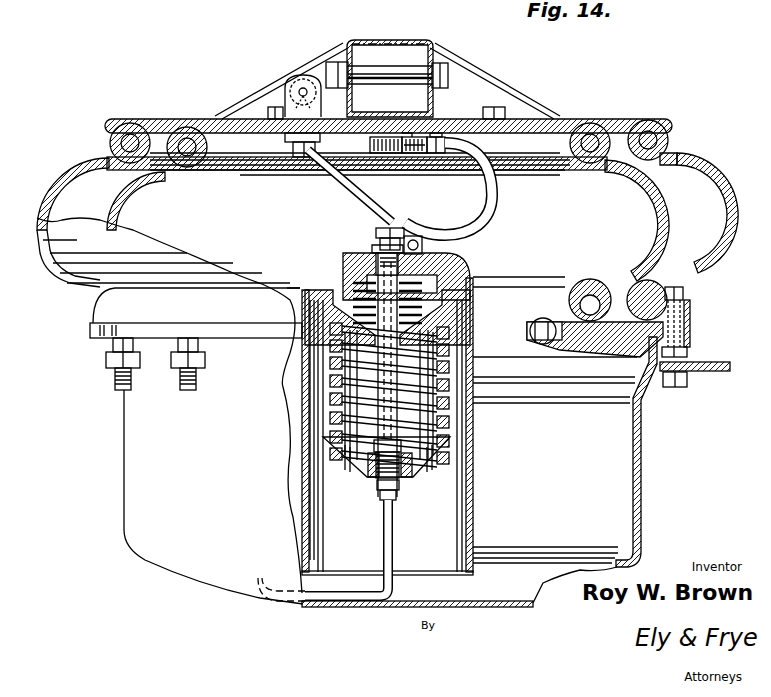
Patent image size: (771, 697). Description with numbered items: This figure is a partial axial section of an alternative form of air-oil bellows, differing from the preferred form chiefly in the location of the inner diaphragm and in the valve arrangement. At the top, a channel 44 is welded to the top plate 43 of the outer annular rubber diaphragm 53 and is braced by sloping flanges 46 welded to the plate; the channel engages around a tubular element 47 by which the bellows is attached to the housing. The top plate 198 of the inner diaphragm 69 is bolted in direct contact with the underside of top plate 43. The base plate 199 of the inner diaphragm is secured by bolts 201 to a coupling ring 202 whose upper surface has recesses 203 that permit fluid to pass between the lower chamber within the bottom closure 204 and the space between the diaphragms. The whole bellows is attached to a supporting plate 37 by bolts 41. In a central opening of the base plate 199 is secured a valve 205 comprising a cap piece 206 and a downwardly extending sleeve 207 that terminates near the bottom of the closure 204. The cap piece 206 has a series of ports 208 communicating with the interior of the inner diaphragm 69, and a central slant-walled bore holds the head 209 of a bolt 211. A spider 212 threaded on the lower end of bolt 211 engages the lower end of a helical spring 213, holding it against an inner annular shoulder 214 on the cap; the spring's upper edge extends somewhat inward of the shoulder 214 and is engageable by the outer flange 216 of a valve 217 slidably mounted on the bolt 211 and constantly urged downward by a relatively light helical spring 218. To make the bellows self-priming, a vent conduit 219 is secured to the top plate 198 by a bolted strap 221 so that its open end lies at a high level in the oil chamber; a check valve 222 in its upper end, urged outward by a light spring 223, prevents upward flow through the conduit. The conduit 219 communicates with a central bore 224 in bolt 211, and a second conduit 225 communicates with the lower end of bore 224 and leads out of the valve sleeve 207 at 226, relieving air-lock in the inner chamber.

The plate 37 is at (715, 362).
The bolts 41 is at (688, 309).
The top plate 43 is at (604, 119).
The channel 44 is at (433, 92).
The sloping flanges 46 is at (541, 103).
The tubular element 47 is at (412, 40).
The outer annular rubber diaphragm 53 is at (732, 195).
The inner diaphragm 69 is at (669, 216).
The top plate of inner diaphragm 198 is at (360, 153).
The base plate of inner diaphragm 199 is at (568, 283).
The bolts 201 is at (545, 318).
The coupling ring 202 is at (691, 329).
The recesses 203 is at (604, 322).
The bottom closure 204 is at (636, 487).
The valve 205 is at (479, 261).
The cap piece 206 is at (458, 260).
The sleeve 207 is at (474, 436).
The ports 208 is at (342, 268).
The head 209 is at (373, 247).
The bolt 211 is at (412, 300).
The spider 212 is at (415, 465).
The helical spring 213 is at (445, 367).
The inner annular shoulder 214 is at (334, 318).
The outer flange 216 is at (462, 294).
The valve 217 is at (327, 348).
The light helical spring 218 is at (412, 285).
The conduit 219 is at (493, 194).
The bolted strap 221 is at (433, 156).
The check valve 222 is at (372, 155).
The light spring 223 is at (404, 155).
The central bore 224 is at (470, 402).
The second conduit 225 is at (394, 531).
The outlet of second conduit 226 is at (311, 597).